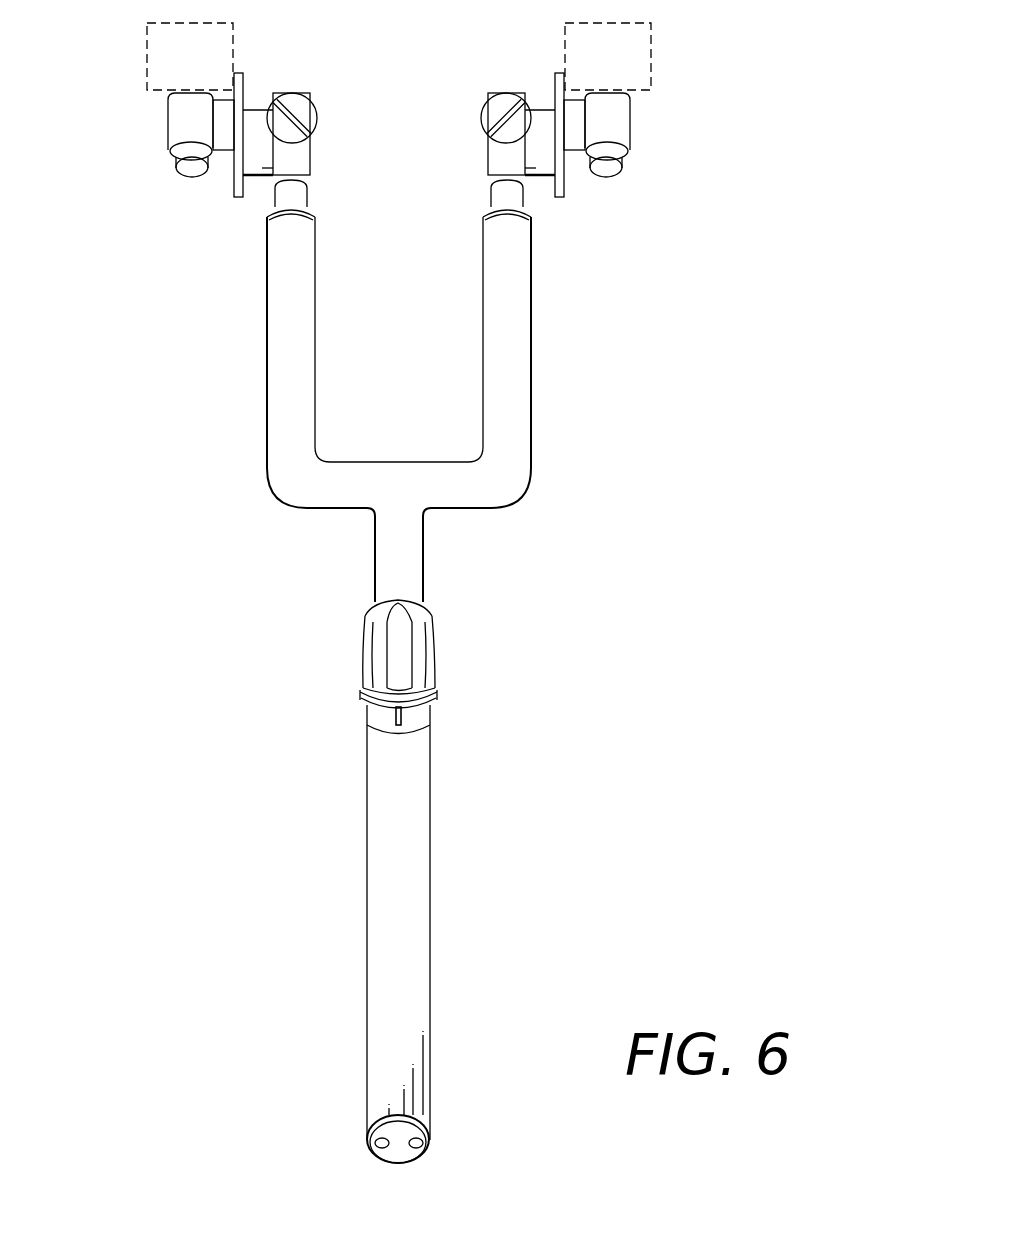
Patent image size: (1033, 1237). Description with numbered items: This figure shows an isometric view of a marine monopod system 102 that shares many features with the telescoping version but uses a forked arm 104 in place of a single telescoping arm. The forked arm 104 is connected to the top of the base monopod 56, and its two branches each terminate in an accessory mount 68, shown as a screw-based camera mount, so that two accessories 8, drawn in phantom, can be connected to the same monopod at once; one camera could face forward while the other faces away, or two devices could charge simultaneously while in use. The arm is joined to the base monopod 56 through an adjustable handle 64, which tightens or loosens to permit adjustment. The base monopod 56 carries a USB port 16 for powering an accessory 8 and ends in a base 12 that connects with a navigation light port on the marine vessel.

The monopod system 102 is at (108, 110).
The accessory 8 is at (233, 40).
The accessory mount 68 is at (487, 145).
The forked arm 104 is at (531, 443).
The adjustable handle 64 is at (435, 663).
The USB port 16 is at (402, 717).
The base monopod 56 is at (367, 950).
The base 12 is at (430, 1136).